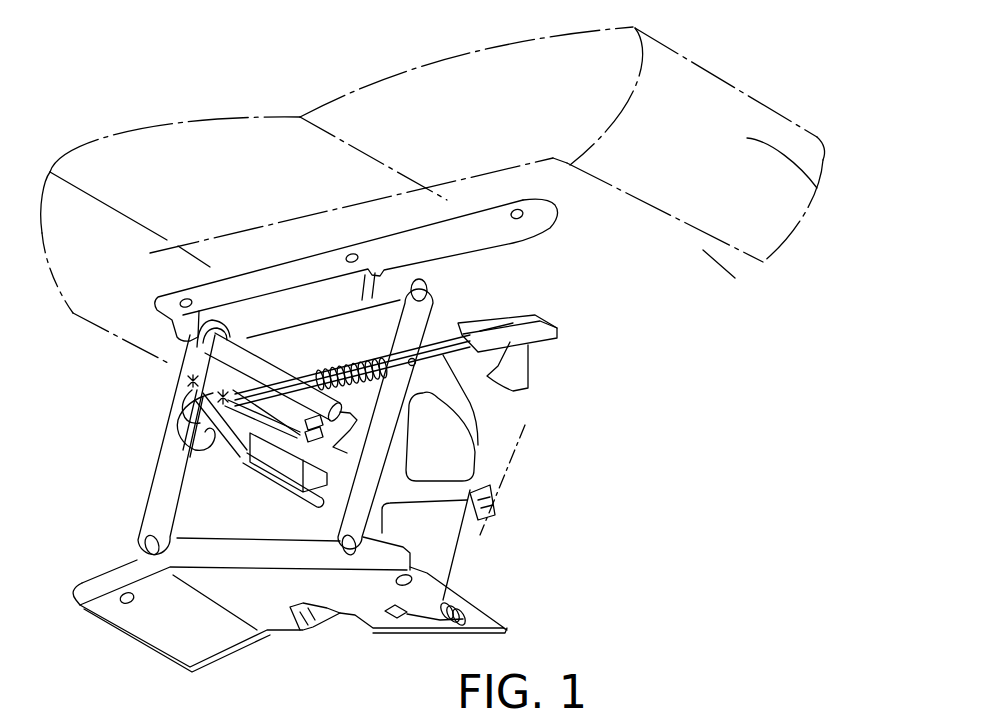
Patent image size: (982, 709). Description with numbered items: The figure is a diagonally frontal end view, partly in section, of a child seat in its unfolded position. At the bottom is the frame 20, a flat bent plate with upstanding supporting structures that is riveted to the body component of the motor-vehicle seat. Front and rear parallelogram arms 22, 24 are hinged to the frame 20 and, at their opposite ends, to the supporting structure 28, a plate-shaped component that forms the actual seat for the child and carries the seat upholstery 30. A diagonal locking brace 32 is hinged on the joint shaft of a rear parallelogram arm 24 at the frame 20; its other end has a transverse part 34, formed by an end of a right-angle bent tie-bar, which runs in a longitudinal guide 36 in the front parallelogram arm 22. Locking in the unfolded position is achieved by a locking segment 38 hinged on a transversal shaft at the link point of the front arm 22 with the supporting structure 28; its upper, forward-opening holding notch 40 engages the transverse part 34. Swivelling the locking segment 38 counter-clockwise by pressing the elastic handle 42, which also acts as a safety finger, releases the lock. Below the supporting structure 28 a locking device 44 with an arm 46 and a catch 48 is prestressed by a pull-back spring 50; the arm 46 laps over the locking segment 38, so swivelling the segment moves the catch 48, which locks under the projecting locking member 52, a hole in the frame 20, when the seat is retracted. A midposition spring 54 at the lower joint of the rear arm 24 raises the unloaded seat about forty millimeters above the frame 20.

The frame 20 is at (281, 638).
The front parallelogram arm 22 is at (150, 528).
The rear parallelogram arm 24 is at (377, 447).
The supporting structure 28 is at (747, 278).
The seat upholstery 30 is at (817, 188).
The diagonal locking brace 32 is at (317, 520).
The transverse part 34 is at (190, 393).
The longitudinal guide 36 is at (183, 482).
The locking segment 38 is at (193, 381).
The holding notch 40 is at (187, 427).
The handle 42 is at (277, 463).
The locking device 44 is at (380, 348).
The arm 46 is at (430, 355).
The catch 48 is at (528, 394).
The pull-back spring 50 is at (340, 355).
The projecting locking member 52 is at (333, 618).
The midposition spring 54 is at (462, 612).